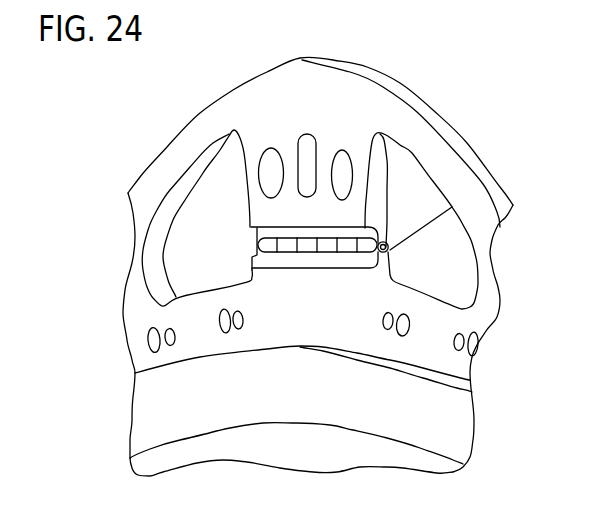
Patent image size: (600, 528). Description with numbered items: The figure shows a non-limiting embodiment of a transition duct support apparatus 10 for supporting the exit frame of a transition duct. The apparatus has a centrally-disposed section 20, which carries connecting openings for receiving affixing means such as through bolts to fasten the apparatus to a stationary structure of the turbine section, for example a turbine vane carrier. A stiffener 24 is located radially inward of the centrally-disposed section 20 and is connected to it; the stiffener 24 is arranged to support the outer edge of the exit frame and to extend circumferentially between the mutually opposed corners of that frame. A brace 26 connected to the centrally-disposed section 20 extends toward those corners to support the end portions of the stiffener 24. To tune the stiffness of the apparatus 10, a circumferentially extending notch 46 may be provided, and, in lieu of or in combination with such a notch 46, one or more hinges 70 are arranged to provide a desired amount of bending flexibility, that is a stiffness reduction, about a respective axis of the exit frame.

The transition duct support apparatus 10 is at (99, 166).
The centrally-disposed section 20 is at (302, 97).
The stiffener 24 is at (277, 323).
The brace 26 is at (177, 147).
The circumferentially extending notch 46 is at (253, 260).
The hinge 70 is at (327, 249).